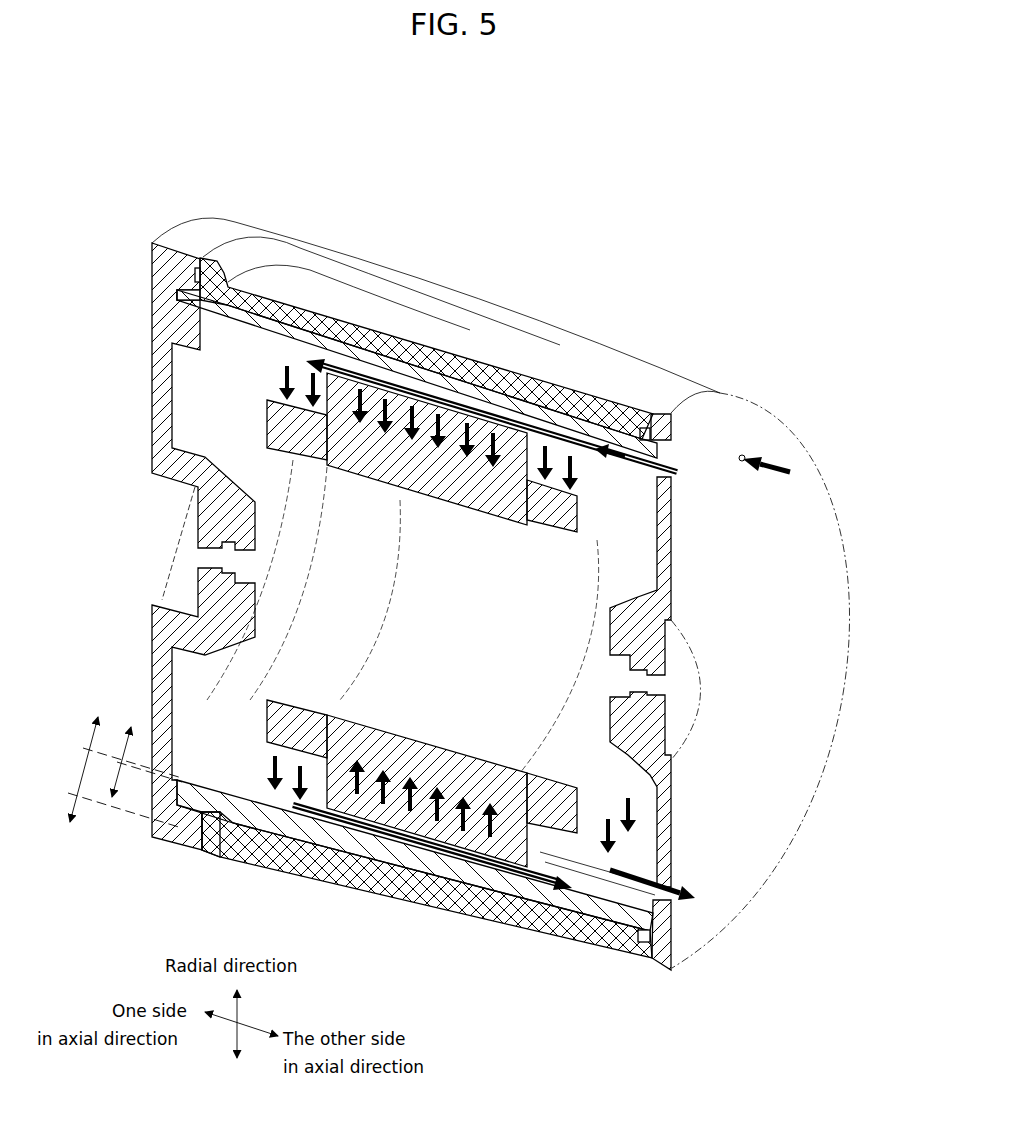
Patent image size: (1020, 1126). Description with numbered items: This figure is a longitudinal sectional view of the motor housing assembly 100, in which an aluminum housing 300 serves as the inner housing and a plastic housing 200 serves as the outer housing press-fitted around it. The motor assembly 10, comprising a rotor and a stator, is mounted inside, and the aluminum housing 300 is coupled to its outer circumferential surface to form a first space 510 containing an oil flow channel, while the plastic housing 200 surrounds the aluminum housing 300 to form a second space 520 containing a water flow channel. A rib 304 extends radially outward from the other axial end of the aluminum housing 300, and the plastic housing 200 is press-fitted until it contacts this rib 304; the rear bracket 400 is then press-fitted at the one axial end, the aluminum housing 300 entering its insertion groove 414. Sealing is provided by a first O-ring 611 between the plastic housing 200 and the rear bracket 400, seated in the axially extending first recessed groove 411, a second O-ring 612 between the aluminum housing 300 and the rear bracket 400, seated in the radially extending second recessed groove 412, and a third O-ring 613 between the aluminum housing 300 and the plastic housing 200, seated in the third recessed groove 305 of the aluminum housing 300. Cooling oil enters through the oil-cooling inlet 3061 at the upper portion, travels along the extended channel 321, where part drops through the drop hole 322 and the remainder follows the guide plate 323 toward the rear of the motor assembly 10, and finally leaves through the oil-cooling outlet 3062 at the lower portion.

The motor housing assembly 100 is at (118, 181).
The plastic housing 200 is at (340, 265).
The aluminum housing 300 is at (838, 662).
The rib 304 is at (663, 425).
The third recessed groove 305 is at (648, 430).
The oil-cooling inlet 3061 is at (742, 455).
The oil-cooling outlet 3062 is at (677, 880).
The extended channel 321 is at (587, 440).
The drop hole 322 is at (552, 440).
The guide plate 323 is at (500, 393).
The rear bracket 400 is at (152, 280).
The first recessed groove 411 is at (152, 243).
The second recessed groove 412 is at (152, 332).
The insertion groove 414 is at (152, 302).
The first O-ring 611 is at (151, 392).
The second O-ring 612 is at (151, 585).
The third O-ring 613 is at (639, 370).
The first space 510 is at (208, 855).
The second space 520 is at (253, 823).
The motor assembly 10 is at (417, 847).